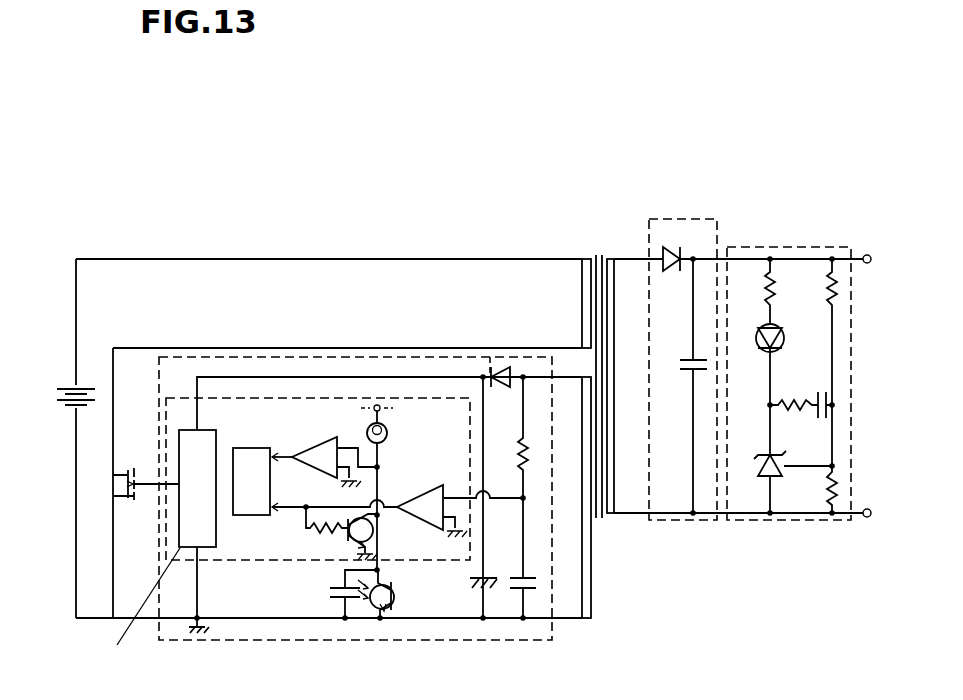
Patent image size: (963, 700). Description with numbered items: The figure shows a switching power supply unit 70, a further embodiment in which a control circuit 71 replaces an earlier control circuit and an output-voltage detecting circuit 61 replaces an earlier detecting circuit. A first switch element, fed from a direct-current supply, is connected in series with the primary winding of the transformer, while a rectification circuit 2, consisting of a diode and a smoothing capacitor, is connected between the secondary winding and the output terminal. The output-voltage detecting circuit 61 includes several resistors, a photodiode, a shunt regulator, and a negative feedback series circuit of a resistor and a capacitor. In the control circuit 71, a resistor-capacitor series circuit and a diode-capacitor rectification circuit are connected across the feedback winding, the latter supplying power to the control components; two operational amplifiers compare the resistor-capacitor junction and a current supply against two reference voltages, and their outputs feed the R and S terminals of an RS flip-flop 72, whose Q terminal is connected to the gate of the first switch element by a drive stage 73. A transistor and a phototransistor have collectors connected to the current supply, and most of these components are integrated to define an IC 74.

The switching power supply unit 70 is at (316, 206).
The control circuit 71 is at (377, 357).
The RS flip-flop 72 is at (250, 448).
The drive stage 73 is at (188, 430).
The IC 74 is at (322, 398).
The rectification circuit 2 is at (686, 218).
The output-voltage detecting circuit 61 is at (778, 247).